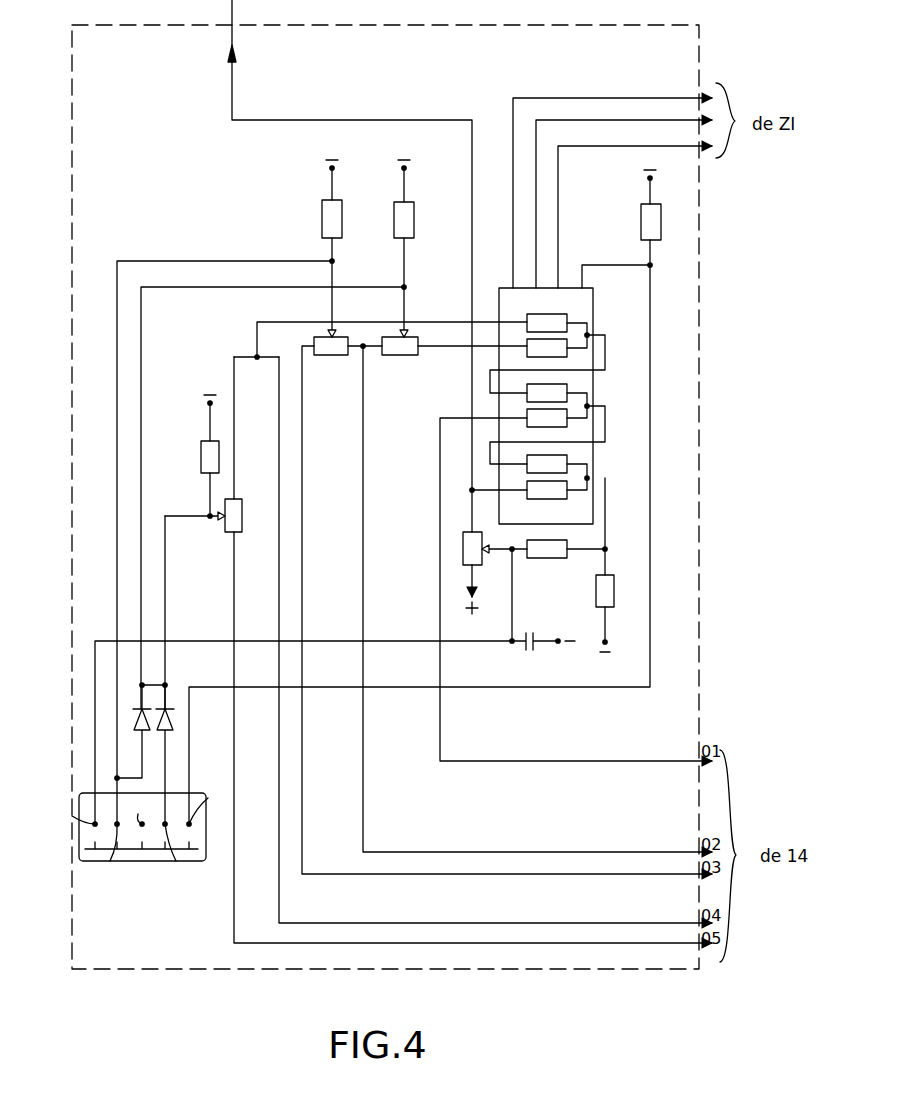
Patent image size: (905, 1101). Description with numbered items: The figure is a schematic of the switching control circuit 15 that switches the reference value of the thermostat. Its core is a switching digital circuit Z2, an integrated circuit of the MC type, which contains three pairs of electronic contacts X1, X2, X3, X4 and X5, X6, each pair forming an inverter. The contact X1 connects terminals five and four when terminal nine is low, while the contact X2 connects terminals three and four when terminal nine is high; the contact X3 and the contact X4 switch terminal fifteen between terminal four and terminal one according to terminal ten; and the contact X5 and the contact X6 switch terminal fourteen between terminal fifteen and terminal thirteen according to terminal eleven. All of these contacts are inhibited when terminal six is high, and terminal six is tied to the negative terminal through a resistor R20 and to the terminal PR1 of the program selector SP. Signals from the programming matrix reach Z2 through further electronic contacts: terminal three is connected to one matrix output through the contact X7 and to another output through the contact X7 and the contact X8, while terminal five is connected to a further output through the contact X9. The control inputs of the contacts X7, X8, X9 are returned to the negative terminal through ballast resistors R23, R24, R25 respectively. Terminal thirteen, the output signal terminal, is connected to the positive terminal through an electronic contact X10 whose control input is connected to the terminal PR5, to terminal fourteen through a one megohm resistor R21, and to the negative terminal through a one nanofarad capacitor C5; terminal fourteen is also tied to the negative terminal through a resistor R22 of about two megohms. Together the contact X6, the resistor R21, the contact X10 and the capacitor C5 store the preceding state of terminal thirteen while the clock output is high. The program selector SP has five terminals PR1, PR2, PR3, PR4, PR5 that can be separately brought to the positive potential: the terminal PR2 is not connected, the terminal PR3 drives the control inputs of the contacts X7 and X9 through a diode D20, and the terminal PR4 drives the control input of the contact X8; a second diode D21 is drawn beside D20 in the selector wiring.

The switching control circuit 15 is at (694, 598).
The resistor R20 is at (653, 236).
The resistor R21 is at (542, 558).
The resistor R22 is at (596, 587).
The ballast resistor R23 is at (415, 217).
The ballast resistor R24 is at (343, 214).
The ballast resistor R25 is at (203, 456).
The electronic contact X1 is at (538, 316).
The electronic contact X2 is at (556, 355).
The electronic contact X3 is at (560, 388).
The electronic contact X4 is at (559, 426).
The electronic contact X5 is at (559, 459).
The electronic contact X6 is at (558, 498).
The electronic contact X7 is at (407, 355).
The electronic contact X8 is at (326, 366).
The electronic contact X9 is at (243, 522).
The electronic contact X10 is at (482, 567).
The switching digital circuit Z2 is at (596, 310).
The capacitor C5 is at (525, 650).
The diode D20 is at (174, 725).
The diode D21 is at (131, 725).
The program selector SP is at (138, 864).
The program selector terminal PR1 is at (208, 800).
The program selector terminal PR2 is at (186, 854).
The program selector terminal PR3 is at (158, 814).
The program selector terminal PR4 is at (107, 854).
The program selector terminal PR5 is at (64, 816).